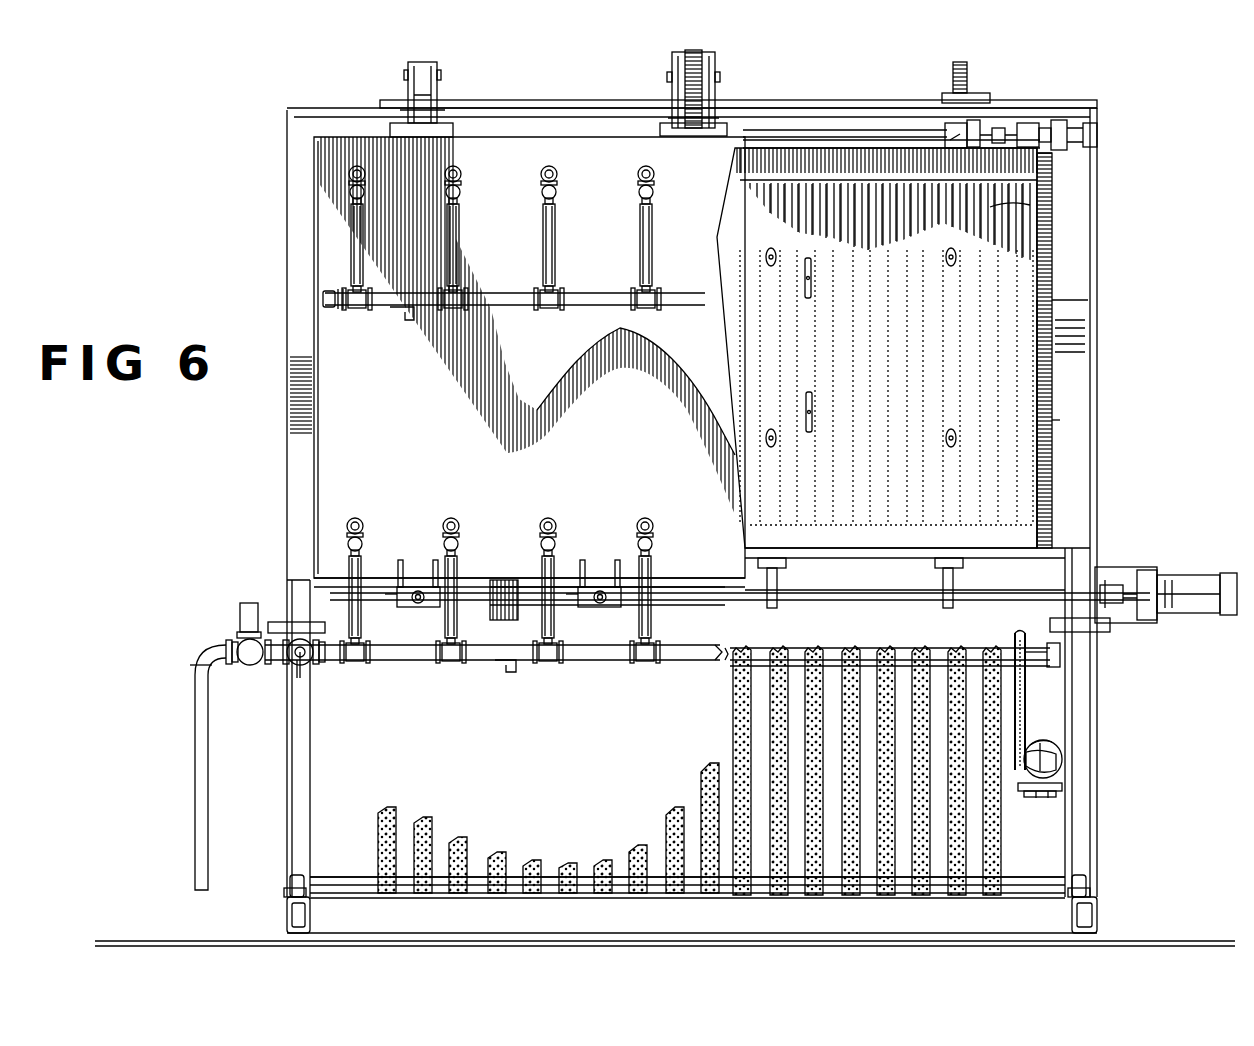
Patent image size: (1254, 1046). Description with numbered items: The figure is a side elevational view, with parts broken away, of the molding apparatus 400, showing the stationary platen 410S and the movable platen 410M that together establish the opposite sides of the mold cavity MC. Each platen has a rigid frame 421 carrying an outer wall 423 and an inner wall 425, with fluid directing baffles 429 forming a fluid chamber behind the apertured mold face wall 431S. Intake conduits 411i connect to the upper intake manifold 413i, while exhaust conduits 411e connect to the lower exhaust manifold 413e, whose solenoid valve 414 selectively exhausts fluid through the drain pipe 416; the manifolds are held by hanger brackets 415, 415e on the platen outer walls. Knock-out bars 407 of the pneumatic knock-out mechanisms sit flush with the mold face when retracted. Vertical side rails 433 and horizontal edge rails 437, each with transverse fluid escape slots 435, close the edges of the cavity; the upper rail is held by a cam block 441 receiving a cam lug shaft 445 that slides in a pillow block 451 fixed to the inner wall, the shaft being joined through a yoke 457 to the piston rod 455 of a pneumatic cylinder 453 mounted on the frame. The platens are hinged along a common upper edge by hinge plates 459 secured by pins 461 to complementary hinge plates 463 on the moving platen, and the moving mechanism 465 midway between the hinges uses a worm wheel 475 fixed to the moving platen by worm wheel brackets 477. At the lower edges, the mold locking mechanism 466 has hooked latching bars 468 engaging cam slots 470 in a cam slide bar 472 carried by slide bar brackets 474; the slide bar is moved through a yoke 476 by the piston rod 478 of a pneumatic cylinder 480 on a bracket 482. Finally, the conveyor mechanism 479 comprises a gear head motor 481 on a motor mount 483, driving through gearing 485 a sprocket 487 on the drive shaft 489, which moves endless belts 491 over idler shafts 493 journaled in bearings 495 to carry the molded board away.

The molding apparatus 400 is at (240, 112).
The knock-out bars 407 is at (805, 305).
The movable platen 410M is at (340, 443).
The stationary platen 410S is at (1058, 405).
The intake conduits 411i is at (648, 258).
The exhaust conduits 411e is at (550, 572).
The intake manifold 413i is at (520, 306).
The exhaust manifold 413e is at (405, 665).
The solenoid valve 414 is at (250, 610).
The hanger bracket 415 is at (405, 316).
The hanger bracket 415e is at (512, 671).
The drain pipe 416 is at (198, 735).
The platen frame 421 is at (320, 183).
The outer wall 423 is at (625, 447).
The inner wall 425 is at (1010, 225).
The fluid directing baffles 429 is at (1000, 208).
The stationary mold face wall 431S is at (860, 356).
The mold cavity side rails 433 is at (1060, 430).
The fluid escape slots 435 is at (812, 160).
The horizontal edge rails 437 is at (945, 168).
The cam block 441 is at (945, 135).
The cam lug shaft 445 is at (985, 138).
The pillow block 451 is at (1000, 125).
The pneumatic cylinder 453 is at (1040, 125).
The piston rod 455 is at (1045, 157).
The yoke 457 is at (1010, 130).
The hinge plates 459 is at (428, 62).
The hinge pins 461 is at (445, 76).
The complementary hinge plates 463 is at (408, 92).
The platen moving mechanism 465 is at (722, 50).
The mold locking mechanism 466 is at (820, 605).
The latching bars 468 is at (420, 588).
The cam slots 470 is at (745, 608).
The cam slide bar 472 is at (828, 597).
The slide bar brackets 474 is at (432, 610).
The worm wheel 475 is at (692, 52).
The yoke 476 is at (1115, 587).
The worm wheel brackets 477 is at (680, 70).
The piston rod 478 is at (1145, 590).
The conveyor mechanism 479 is at (1050, 730).
The pneumatic cylinder 480 is at (1205, 612).
The gear head motor 481 is at (1062, 765).
The bracket 482 is at (1138, 620).
The motor mount 483 is at (1040, 800).
The gearing 485 is at (1035, 705).
The conveyor drive shaft sprocket 487 is at (1020, 640).
The conveyor drive shaft 489 is at (730, 660).
The endless belts 491 is at (685, 790).
The idler shafts 493 is at (355, 880).
The bearings 495 is at (290, 883).
The mold cavity MC is at (1000, 325).